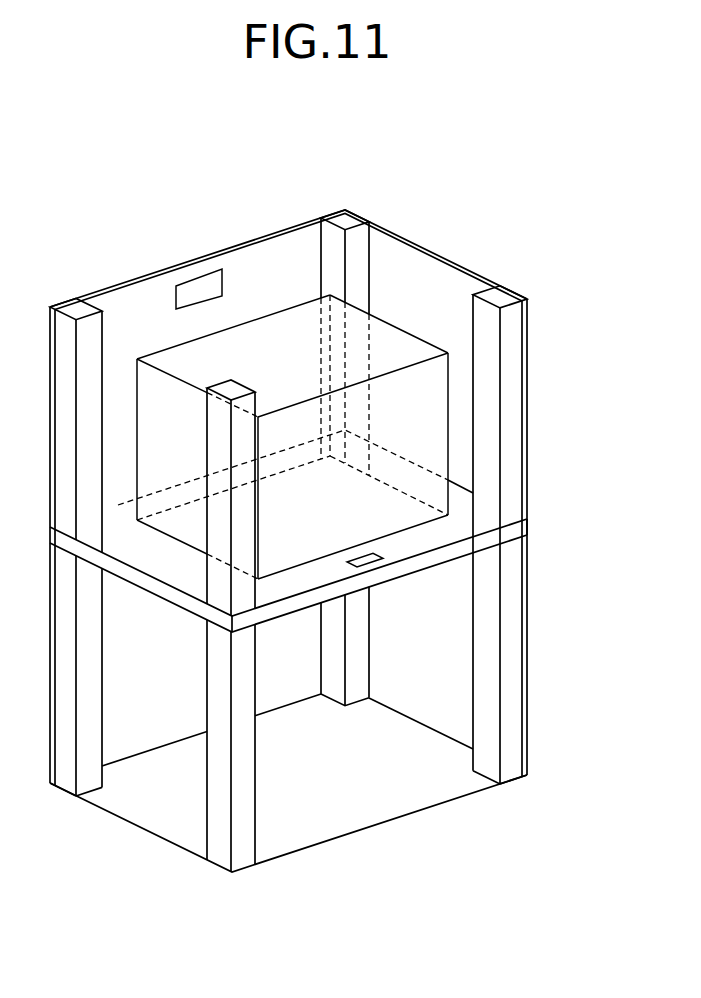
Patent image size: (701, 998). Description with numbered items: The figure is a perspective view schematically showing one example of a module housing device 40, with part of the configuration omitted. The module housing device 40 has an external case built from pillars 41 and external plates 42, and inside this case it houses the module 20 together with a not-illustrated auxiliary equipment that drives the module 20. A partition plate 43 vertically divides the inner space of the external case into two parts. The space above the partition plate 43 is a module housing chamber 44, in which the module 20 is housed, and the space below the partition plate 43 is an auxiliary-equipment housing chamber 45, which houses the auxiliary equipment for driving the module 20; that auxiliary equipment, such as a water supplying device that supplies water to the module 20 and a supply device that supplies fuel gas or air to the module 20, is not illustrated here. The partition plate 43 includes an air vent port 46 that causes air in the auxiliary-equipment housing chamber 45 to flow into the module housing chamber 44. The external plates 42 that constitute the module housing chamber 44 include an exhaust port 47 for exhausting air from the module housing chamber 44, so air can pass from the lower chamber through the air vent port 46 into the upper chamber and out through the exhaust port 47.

The module housing device 40 is at (236, 165).
The pillar 41 is at (77, 303).
The external plate 42 is at (386, 220).
The partition plate 43 is at (510, 534).
The module housing chamber 44 is at (405, 280).
The auxiliary-equipment housing chamber 45 is at (140, 676).
The air vent port 46 is at (475, 593).
The exhaust port 47 is at (193, 288).
The module 20 is at (397, 343).